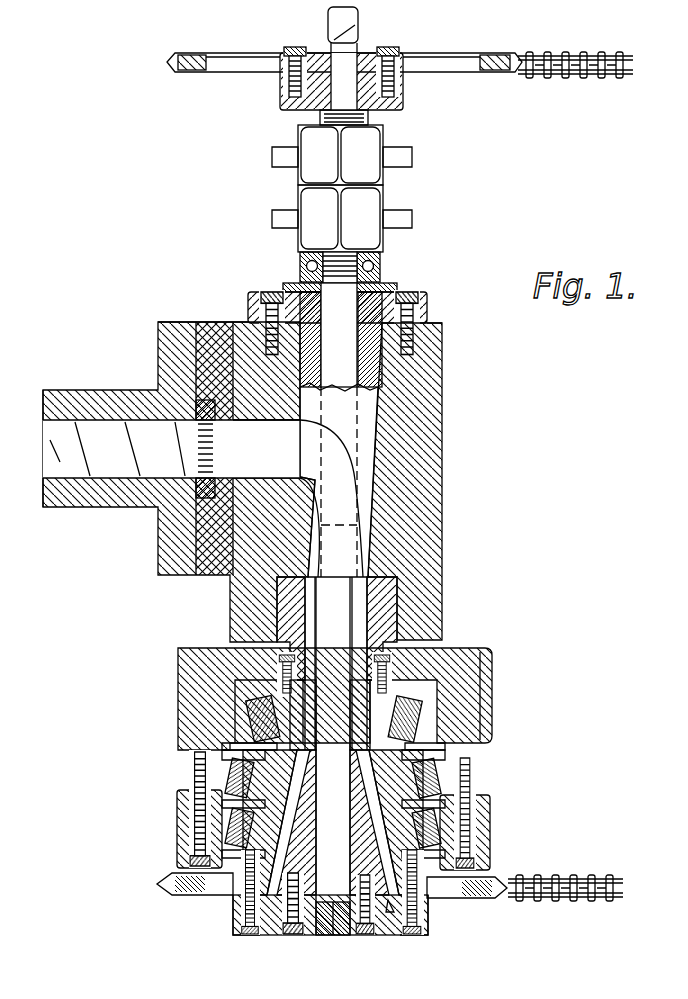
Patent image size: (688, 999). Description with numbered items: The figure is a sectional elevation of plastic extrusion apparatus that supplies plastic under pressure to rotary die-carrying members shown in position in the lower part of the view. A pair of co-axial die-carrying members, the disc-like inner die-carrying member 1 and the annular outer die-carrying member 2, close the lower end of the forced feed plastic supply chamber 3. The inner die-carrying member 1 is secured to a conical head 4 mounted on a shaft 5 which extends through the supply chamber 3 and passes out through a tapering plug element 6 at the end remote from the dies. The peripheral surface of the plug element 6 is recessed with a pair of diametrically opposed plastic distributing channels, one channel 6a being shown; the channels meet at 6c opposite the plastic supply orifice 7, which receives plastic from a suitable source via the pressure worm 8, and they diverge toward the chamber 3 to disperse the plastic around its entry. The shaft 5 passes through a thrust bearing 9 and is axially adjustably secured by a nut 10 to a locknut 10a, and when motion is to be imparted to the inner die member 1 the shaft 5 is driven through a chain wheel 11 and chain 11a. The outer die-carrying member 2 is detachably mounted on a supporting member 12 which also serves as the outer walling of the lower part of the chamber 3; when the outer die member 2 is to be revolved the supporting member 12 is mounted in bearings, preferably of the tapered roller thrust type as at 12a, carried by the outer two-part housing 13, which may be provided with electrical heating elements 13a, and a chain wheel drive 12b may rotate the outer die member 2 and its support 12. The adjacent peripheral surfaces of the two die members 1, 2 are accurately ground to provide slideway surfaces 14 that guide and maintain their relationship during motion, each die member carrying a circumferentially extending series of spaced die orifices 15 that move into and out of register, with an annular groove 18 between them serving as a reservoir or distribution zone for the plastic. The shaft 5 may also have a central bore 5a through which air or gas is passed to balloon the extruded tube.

The inner die-carrying member 1 is at (312, 938).
The outer die-carrying member 2 is at (235, 902).
The plastic supply chamber 3 is at (367, 620).
The conical head 4 is at (357, 795).
The shaft 5 is at (346, 327).
The central bore 5a is at (332, 922).
The tapering plug element 6 is at (358, 566).
The plastic distributing channel 6a is at (345, 505).
The meeting point of channels 6c is at (339, 482).
The plastic supply orifice 7 is at (262, 456).
The pressure worm 8 is at (100, 459).
The thrust bearing 9 is at (372, 268).
The nut 10 is at (372, 205).
The locknut 10a is at (312, 147).
The chain wheel 11 is at (497, 53).
The chain 11a is at (556, 78).
The supporting member 12 is at (265, 815).
The tapered roller thrust bearings 12a is at (245, 745).
The chain wheel drive 12b is at (172, 890).
The two-part housing 13 is at (466, 676).
The electrical heating elements 13a is at (185, 672).
The slideway surfaces 14 is at (245, 918).
The die orifices 15 is at (265, 935).
The annular groove 18 is at (390, 912).